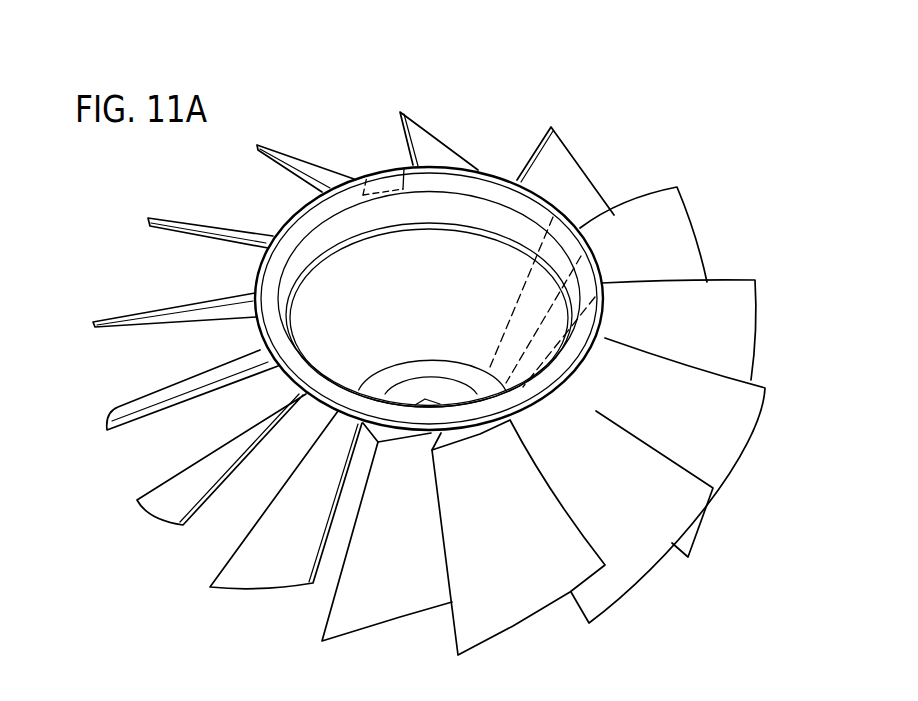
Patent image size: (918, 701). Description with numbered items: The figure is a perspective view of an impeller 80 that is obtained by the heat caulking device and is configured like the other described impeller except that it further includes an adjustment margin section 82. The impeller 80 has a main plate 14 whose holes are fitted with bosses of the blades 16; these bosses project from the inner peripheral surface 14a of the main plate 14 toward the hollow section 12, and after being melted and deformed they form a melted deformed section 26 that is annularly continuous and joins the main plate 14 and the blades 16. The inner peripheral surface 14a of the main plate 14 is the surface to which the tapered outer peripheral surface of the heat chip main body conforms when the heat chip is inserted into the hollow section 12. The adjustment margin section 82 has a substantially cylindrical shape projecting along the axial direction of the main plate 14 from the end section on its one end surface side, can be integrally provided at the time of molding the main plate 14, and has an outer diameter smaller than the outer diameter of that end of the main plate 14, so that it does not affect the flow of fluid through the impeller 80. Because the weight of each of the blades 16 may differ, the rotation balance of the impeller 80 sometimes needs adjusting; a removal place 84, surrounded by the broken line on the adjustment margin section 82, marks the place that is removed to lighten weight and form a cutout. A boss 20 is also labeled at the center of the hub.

The impeller 80 is at (732, 137).
The hollow section 12 is at (328, 290).
The main plate 14 is at (452, 200).
The inner peripheral surface 14a is at (554, 214).
The blade 16 is at (737, 314).
The boss 20 is at (438, 390).
The melted deformed section 26 is at (312, 310).
The adjustment margin section 82 is at (492, 188).
The removal place 84 is at (381, 184).